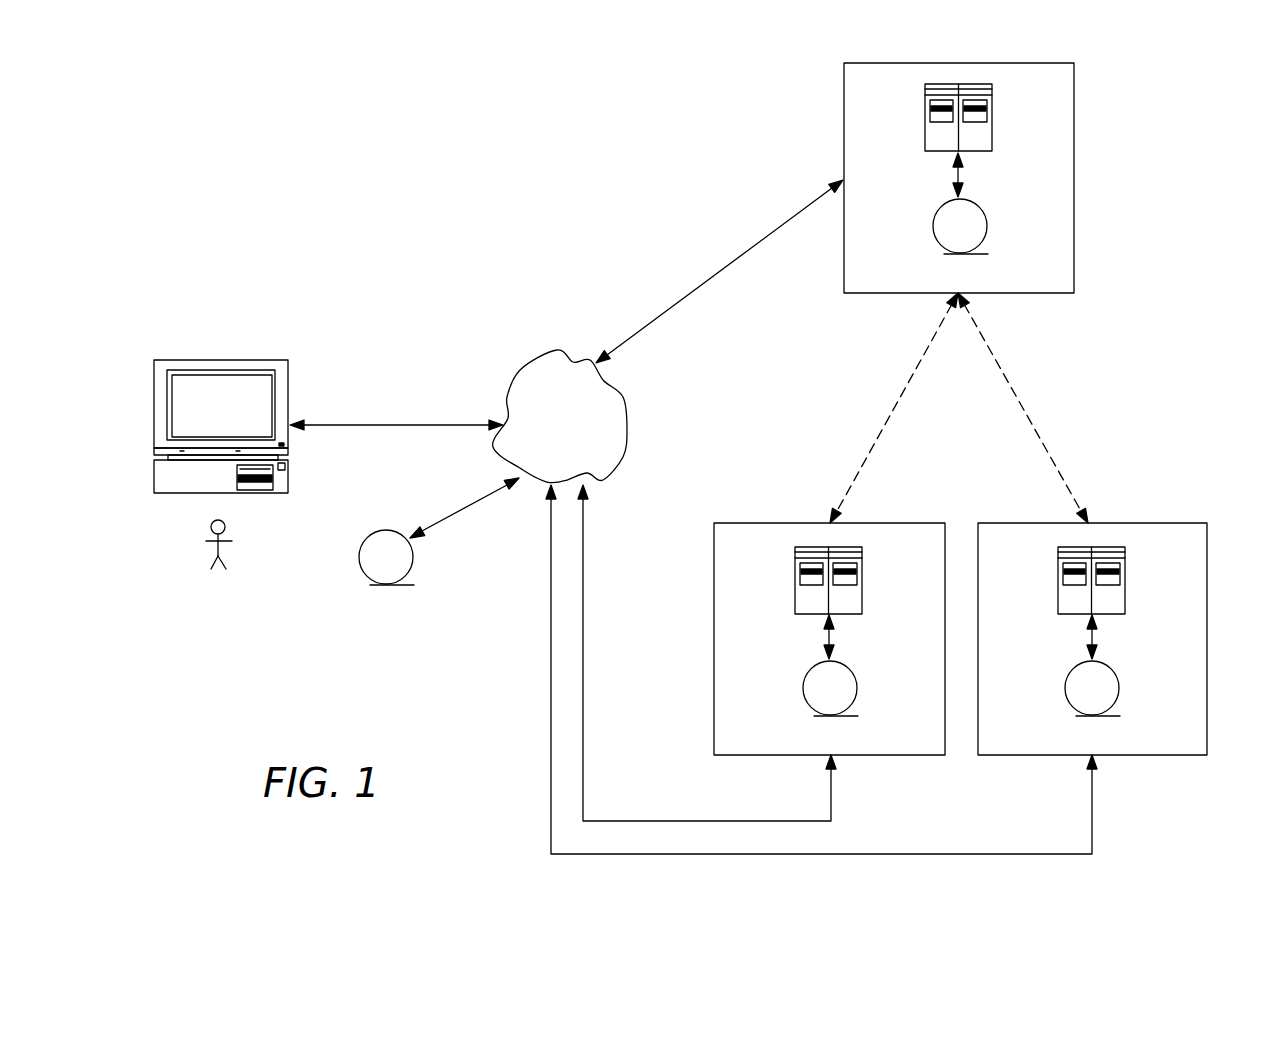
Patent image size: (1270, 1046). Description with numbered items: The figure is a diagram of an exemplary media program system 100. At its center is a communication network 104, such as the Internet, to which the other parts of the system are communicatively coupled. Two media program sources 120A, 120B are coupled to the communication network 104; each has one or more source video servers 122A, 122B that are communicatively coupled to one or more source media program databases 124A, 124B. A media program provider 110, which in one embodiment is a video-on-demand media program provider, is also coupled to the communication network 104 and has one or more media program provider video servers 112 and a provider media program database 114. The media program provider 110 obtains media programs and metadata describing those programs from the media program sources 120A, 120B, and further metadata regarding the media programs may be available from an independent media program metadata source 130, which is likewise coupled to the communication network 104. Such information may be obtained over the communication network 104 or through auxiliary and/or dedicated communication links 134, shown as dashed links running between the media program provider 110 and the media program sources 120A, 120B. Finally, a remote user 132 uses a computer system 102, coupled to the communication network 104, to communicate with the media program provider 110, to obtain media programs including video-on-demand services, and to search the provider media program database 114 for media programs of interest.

The media program system 100 is at (536, 152).
The computer system 102 is at (250, 334).
The communication network 104 is at (623, 397).
The media program provider 110 is at (983, 178).
The media program provider video server 112 is at (992, 100).
The provider media program database 114 is at (988, 232).
The media program source 120A is at (840, 619).
The media program source 120B is at (1102, 619).
The source video server 122A is at (862, 570).
The source video server 122B is at (1125, 570).
The source media program database 124A is at (858, 692).
The source media program database 124B is at (1120, 692).
The independent media program metadata source 130 is at (372, 582).
The remote user 132 is at (218, 577).
The auxiliary communication link 134 is at (900, 392).